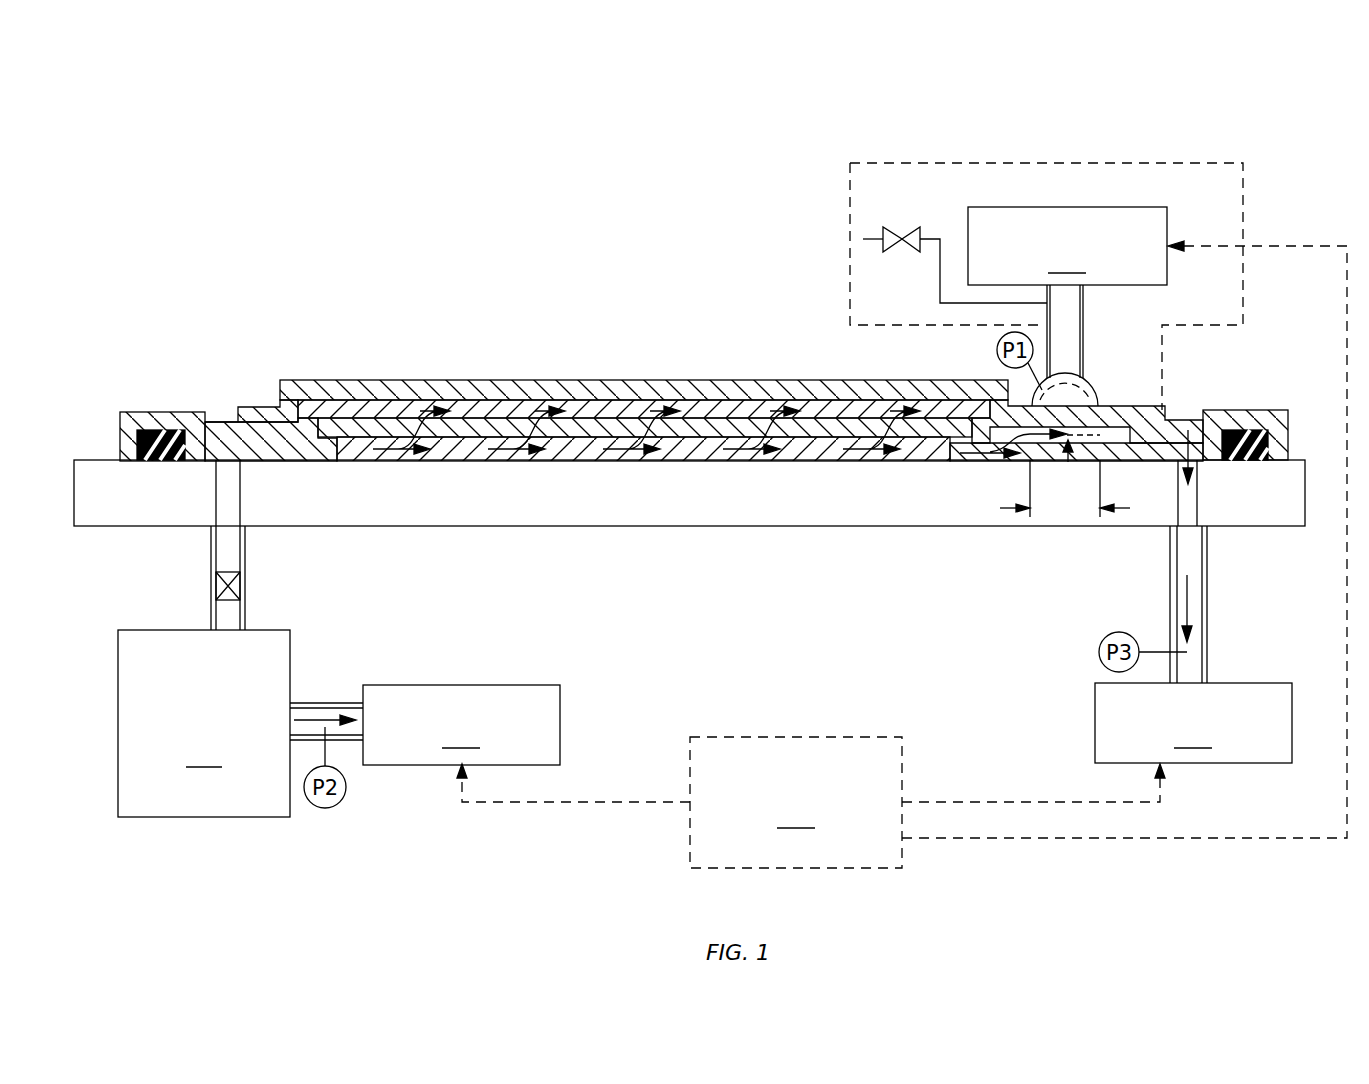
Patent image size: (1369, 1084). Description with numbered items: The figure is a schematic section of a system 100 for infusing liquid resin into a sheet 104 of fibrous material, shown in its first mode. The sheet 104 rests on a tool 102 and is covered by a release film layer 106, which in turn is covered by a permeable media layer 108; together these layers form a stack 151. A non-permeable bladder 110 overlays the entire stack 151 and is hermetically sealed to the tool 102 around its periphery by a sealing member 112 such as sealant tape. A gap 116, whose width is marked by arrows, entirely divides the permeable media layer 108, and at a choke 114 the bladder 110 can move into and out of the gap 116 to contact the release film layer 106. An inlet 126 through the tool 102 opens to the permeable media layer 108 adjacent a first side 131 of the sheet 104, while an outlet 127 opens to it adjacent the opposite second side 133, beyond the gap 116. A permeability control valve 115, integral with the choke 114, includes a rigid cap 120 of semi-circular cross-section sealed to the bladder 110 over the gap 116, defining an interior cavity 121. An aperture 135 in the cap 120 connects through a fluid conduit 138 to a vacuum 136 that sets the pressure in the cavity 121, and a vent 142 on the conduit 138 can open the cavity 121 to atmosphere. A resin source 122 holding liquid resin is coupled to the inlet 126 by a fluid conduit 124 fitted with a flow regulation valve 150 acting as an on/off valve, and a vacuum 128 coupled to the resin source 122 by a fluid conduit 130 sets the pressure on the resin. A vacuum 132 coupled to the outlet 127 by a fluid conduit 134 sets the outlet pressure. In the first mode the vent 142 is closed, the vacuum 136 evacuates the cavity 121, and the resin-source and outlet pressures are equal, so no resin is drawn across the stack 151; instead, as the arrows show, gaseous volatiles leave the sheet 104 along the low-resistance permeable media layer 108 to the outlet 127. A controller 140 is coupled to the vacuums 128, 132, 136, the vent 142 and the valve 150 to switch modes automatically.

The system 100 is at (1028, 88).
The tool 102 is at (135, 505).
The sheet 104 is at (483, 455).
The release film layer 106 is at (400, 430).
The permeable media layer 108 is at (490, 398).
The non-permeable bladder 110 is at (547, 405).
The sealing member 112 is at (130, 420).
The choke 114 is at (1068, 462).
The permeability control valve 115 is at (1115, 162).
The gap 116 is at (1005, 508).
The rigid cap 120 is at (1090, 405).
The interior cavity 121 is at (1110, 405).
The resin source 122 is at (204, 723).
The fluid conduit 124 is at (245, 546).
The inlet 126 is at (212, 538).
The outlet 127 is at (1207, 538).
The vacuum 128 is at (461, 725).
The fluid conduit 130 is at (330, 703).
The first side 131 is at (337, 440).
The vacuum 132 is at (1193, 723).
The second side 133 is at (962, 455).
The fluid conduit 134 is at (1208, 607).
The aperture 135 is at (1070, 388).
The vacuum 136 is at (1067, 246).
The fluid conduit 138 is at (1045, 332).
The controller 140 is at (902, 554).
The vent 142 is at (892, 228).
The flow regulation valve 150 is at (242, 588).
The stack 151 is at (283, 400).